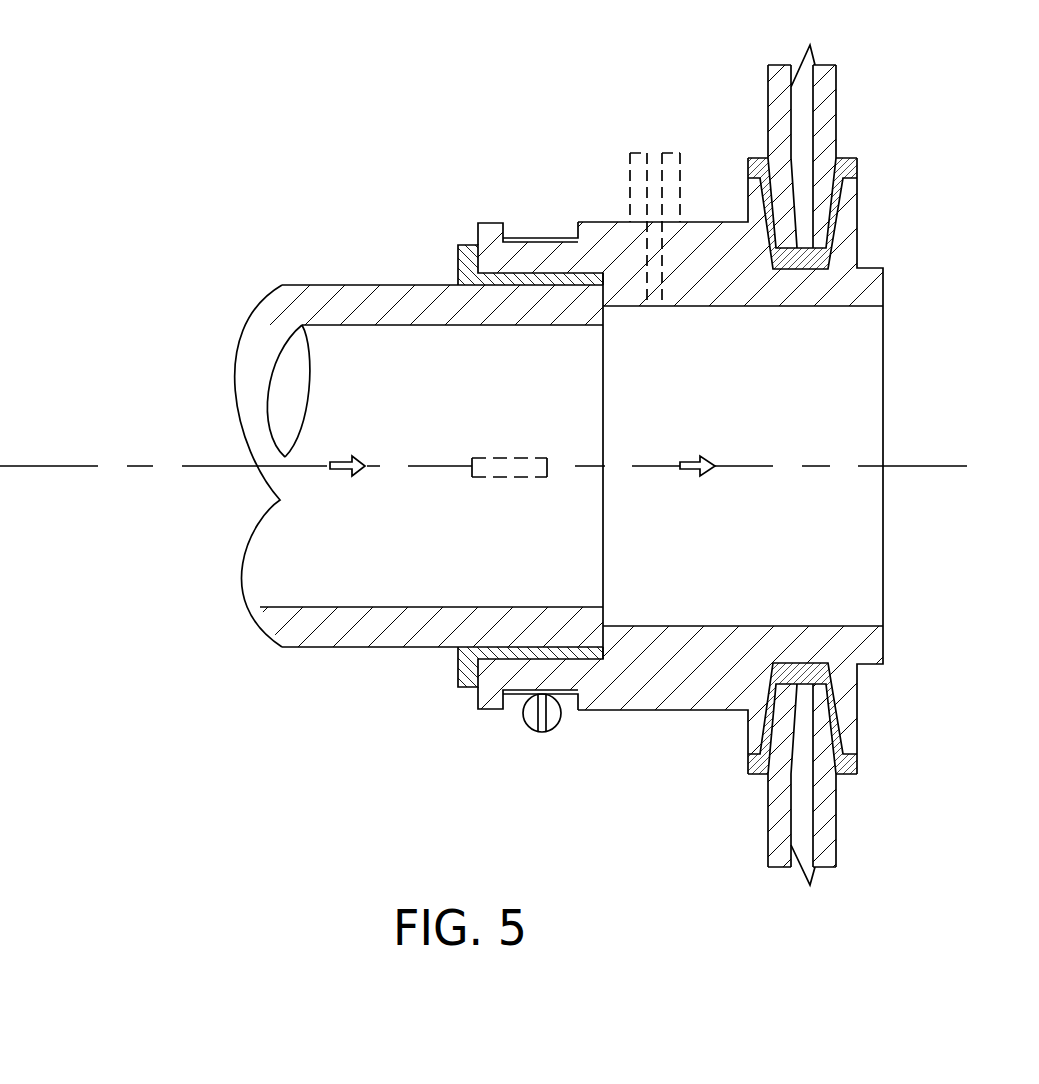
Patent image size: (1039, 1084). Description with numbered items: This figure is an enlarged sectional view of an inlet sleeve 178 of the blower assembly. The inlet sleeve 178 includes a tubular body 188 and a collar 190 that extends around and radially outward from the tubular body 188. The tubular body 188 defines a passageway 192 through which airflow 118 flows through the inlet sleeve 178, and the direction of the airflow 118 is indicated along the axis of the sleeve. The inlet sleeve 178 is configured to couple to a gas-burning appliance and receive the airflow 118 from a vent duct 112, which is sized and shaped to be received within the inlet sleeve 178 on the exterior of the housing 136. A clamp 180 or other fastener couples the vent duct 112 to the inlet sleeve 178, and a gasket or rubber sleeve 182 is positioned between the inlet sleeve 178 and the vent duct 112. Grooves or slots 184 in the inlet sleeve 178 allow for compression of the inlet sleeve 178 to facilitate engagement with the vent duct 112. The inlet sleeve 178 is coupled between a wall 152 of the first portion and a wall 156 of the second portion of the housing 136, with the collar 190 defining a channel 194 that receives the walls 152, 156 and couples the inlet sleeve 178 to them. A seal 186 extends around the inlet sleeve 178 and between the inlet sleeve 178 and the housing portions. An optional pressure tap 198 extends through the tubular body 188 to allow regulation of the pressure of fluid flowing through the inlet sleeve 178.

The vent duct 112 is at (335, 633).
The airflow 118 is at (343, 470).
The housing 136 is at (837, 873).
The wall 152 is at (790, 137).
The wall 156 is at (870, 822).
The inlet sleeve 178 is at (902, 245).
The clamp 180 is at (532, 727).
The rubber sleeve 182 is at (460, 266).
The slots 184 is at (477, 457).
The seal 186 is at (825, 688).
The tubular body 188 is at (791, 466).
The collar 190 is at (847, 212).
The passageway 192 is at (830, 518).
The channel 194 is at (802, 690).
The pressure tap 198 is at (632, 183).